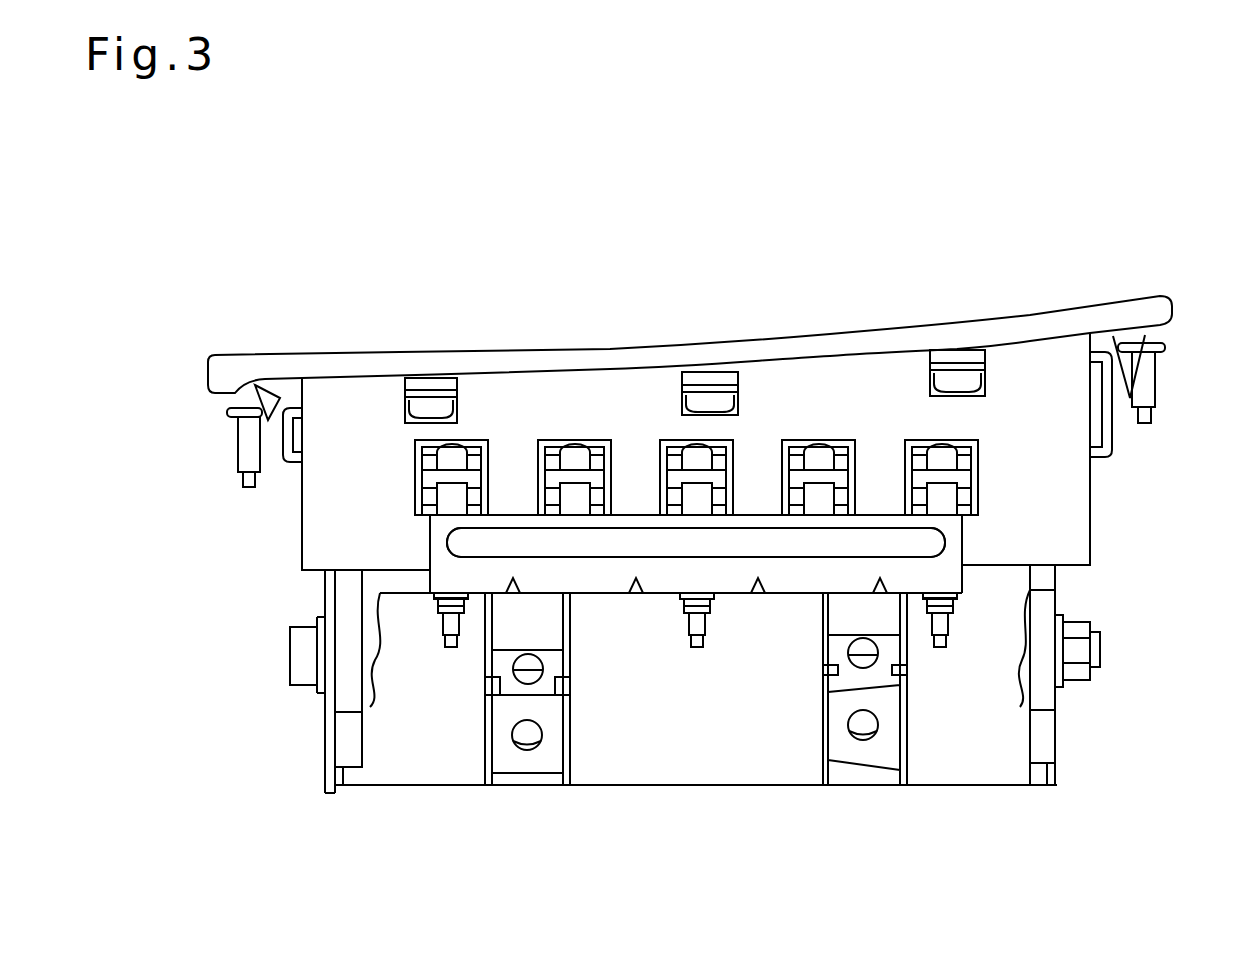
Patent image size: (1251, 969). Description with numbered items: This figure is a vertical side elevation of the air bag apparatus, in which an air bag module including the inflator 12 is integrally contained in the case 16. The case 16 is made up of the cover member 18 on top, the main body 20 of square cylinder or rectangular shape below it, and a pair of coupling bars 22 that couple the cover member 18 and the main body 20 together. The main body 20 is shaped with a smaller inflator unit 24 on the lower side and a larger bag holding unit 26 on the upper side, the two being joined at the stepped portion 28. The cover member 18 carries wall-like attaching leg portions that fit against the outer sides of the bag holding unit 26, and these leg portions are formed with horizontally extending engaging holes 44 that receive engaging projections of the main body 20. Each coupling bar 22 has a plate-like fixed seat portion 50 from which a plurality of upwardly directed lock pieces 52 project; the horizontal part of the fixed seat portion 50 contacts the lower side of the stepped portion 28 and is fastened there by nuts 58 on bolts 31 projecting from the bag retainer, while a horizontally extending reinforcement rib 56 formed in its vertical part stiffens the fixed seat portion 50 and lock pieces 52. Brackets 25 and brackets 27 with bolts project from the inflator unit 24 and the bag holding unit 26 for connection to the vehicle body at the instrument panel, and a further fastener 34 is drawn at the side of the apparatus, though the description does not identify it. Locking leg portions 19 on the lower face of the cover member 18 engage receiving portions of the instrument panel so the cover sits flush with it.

The inflator 12 is at (317, 690).
The case 16 is at (1095, 497).
The cover member 18 is at (768, 345).
The locking leg portions 19 is at (268, 412).
The main body 20 is at (1012, 765).
The coupling bars 22 is at (952, 543).
The inflator unit 24 is at (460, 727).
The brackets 25 is at (550, 767).
The bag holding unit 26 is at (332, 508).
The brackets 27 is at (1105, 423).
The stepped portion 28 is at (393, 570).
The bolts 31 is at (448, 640).
The bolt 34 is at (1073, 670).
The engaging holes 44 is at (595, 455).
The fixed seat portion 50 is at (788, 580).
The lock pieces 52 is at (573, 455).
The reinforcement rib 56 is at (607, 548).
The nuts 58 is at (957, 600).